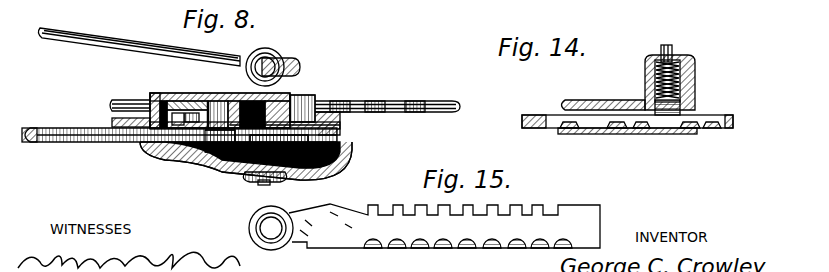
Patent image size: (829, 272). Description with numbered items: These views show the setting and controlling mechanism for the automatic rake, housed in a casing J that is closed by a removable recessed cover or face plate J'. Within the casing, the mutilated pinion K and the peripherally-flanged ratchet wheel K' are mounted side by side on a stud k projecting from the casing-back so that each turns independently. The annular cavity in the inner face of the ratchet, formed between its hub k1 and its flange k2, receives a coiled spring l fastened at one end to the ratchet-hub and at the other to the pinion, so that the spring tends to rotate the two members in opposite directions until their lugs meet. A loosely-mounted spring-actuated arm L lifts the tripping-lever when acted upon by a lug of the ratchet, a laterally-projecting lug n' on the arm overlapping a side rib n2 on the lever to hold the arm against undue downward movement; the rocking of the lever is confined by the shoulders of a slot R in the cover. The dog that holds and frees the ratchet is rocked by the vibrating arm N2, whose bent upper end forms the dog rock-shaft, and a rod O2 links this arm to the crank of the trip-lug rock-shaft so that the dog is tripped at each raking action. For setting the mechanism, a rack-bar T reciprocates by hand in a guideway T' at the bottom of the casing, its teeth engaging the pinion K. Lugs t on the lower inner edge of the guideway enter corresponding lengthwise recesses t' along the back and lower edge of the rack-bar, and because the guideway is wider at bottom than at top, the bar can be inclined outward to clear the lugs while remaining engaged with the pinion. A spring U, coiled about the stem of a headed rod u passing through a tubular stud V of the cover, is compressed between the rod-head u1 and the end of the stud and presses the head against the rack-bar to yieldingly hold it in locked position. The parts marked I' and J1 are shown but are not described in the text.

In FIG. 8, the rod O2 is at (139, 45).
In FIG. 8, the arm or lever N2 is at (292, 62).
In FIG. 8, the ratchet wheel or disk K' is at (130, 102).
In FIG. 8, the coiled spring l is at (192, 112).
In FIG. 8, the mutilated pinion K is at (191, 97).
In FIG. 8, the stud k is at (222, 101).
In FIG. 8, the flange k2 is at (272, 96).
In FIG. 8, the hub k1 is at (220, 141).
In FIG. 8, the casing J is at (242, 106).
In FIG. 14, the casing J is at (627, 142).
In FIG. 8, the rack-bar T is at (387, 97).
In FIG. 15, the rack-bar T is at (424, 227).
In FIG. 8, the spring-actuated arm L is at (328, 121).
In FIG. 8, the guide rail I' is at (179, 146).
In FIG. 8, the slot R is at (135, 150).
In FIG. 8, the casing-cover or face plate J' is at (246, 166).
In FIG. 8, the laterally-projecting lug n' is at (238, 173).
In FIG. 8, the tubular stud V is at (256, 180).
In FIG. 14, the tubular stud V is at (652, 80).
In FIG. 8, the headed rod u is at (266, 180).
In FIG. 14, the headed rod u is at (670, 46).
In FIG. 8, the side rib n2 is at (293, 147).
In FIG. 14, the guideway T' is at (627, 104).
In FIG. 14, the lugs t is at (653, 137).
In FIG. 15, the lugs t is at (468, 254).
In FIG. 14, the recesses t' is at (644, 137).
In FIG. 15, the recesses t' is at (468, 253).
In FIG. 14, the bracket arm J1 is at (580, 100).
In FIG. 14, the spring U is at (690, 76).
In FIG. 14, the rod-head u1 is at (693, 100).